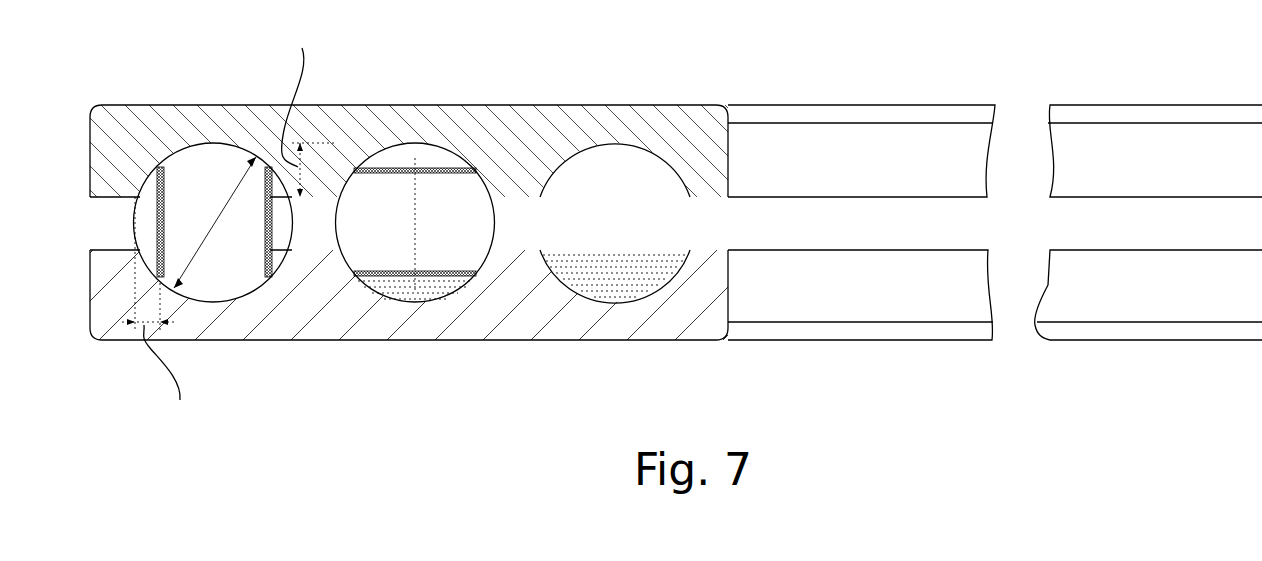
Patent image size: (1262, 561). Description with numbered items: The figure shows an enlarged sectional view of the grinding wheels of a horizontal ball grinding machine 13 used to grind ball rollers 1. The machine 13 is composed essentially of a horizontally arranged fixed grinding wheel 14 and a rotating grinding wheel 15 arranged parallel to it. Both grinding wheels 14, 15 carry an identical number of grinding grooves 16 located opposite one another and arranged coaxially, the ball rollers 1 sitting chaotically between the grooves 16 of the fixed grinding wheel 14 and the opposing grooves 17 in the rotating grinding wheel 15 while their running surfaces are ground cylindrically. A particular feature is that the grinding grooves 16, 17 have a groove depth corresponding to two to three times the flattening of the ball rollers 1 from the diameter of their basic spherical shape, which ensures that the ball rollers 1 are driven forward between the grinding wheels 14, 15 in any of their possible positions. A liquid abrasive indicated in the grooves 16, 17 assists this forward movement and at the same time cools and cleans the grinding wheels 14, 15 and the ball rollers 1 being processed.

The ball roller 1 is at (201, 162).
The horizontal ball grinding machine 13 is at (643, 100).
The fixed grinding wheel 14 is at (540, 132).
The rotating grinding wheel 15 is at (575, 321).
The grinding grooves 16 is at (432, 143).
The lower ball pocket / raceway recess 17 is at (401, 304).